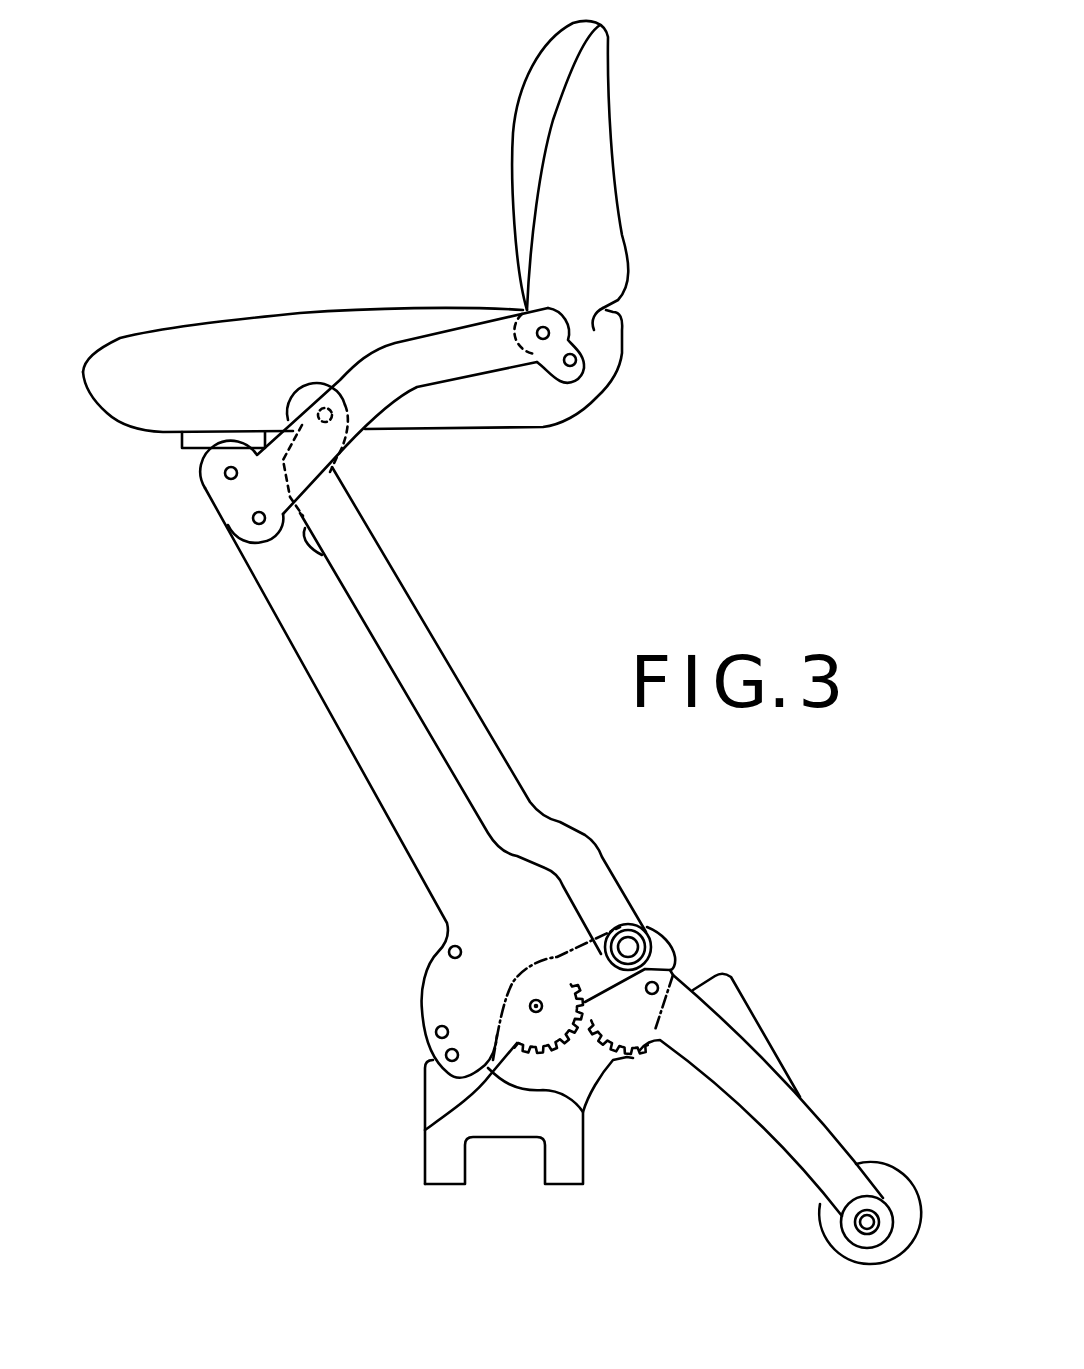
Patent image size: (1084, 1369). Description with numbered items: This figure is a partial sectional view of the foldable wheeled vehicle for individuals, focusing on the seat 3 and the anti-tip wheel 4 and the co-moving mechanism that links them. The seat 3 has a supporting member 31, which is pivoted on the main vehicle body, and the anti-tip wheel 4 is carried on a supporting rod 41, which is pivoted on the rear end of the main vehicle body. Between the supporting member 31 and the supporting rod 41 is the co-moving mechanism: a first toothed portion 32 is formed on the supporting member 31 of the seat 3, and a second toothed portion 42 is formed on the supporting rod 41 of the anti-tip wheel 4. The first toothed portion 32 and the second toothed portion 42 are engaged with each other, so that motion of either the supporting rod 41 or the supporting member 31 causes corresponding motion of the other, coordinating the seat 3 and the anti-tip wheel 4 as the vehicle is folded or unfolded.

The seat 3 is at (587, 141).
The supporting member 31 is at (382, 764).
The first toothed portion 32 is at (550, 1050).
The anti-tip wheel 4 is at (837, 1230).
The supporting rod 41 is at (800, 1122).
The second toothed portion 42 is at (613, 1063).